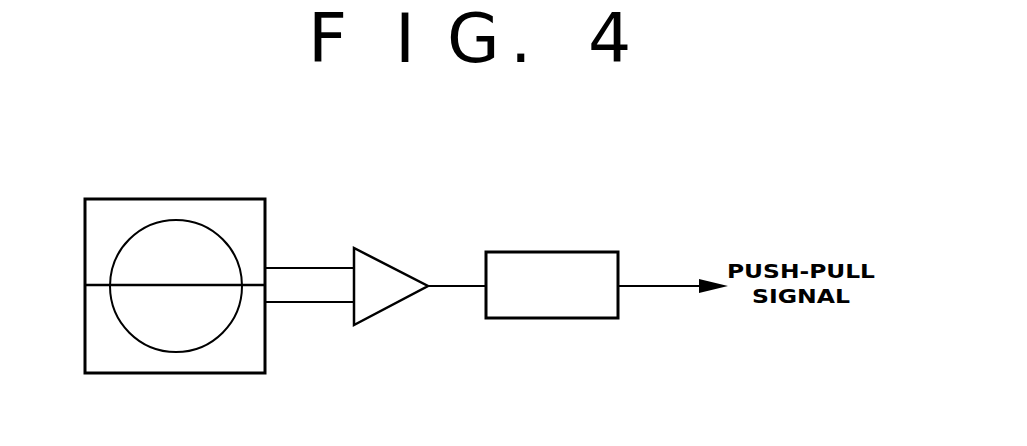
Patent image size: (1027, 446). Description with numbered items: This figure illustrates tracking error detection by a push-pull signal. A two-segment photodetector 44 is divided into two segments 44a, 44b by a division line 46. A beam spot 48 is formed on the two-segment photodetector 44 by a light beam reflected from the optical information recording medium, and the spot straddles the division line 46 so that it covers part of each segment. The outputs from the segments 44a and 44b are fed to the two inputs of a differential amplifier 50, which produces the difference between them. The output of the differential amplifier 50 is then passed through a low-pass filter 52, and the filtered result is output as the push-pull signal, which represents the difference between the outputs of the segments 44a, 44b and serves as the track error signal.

The two-segment photodetector 44 is at (118, 373).
The segment 44a is at (223, 205).
The segment 44b is at (225, 362).
The division line 46 is at (130, 285).
The beam spot 48 is at (166, 221).
The differential amplifier 50 is at (401, 270).
The low-pass filter 52 is at (555, 250).